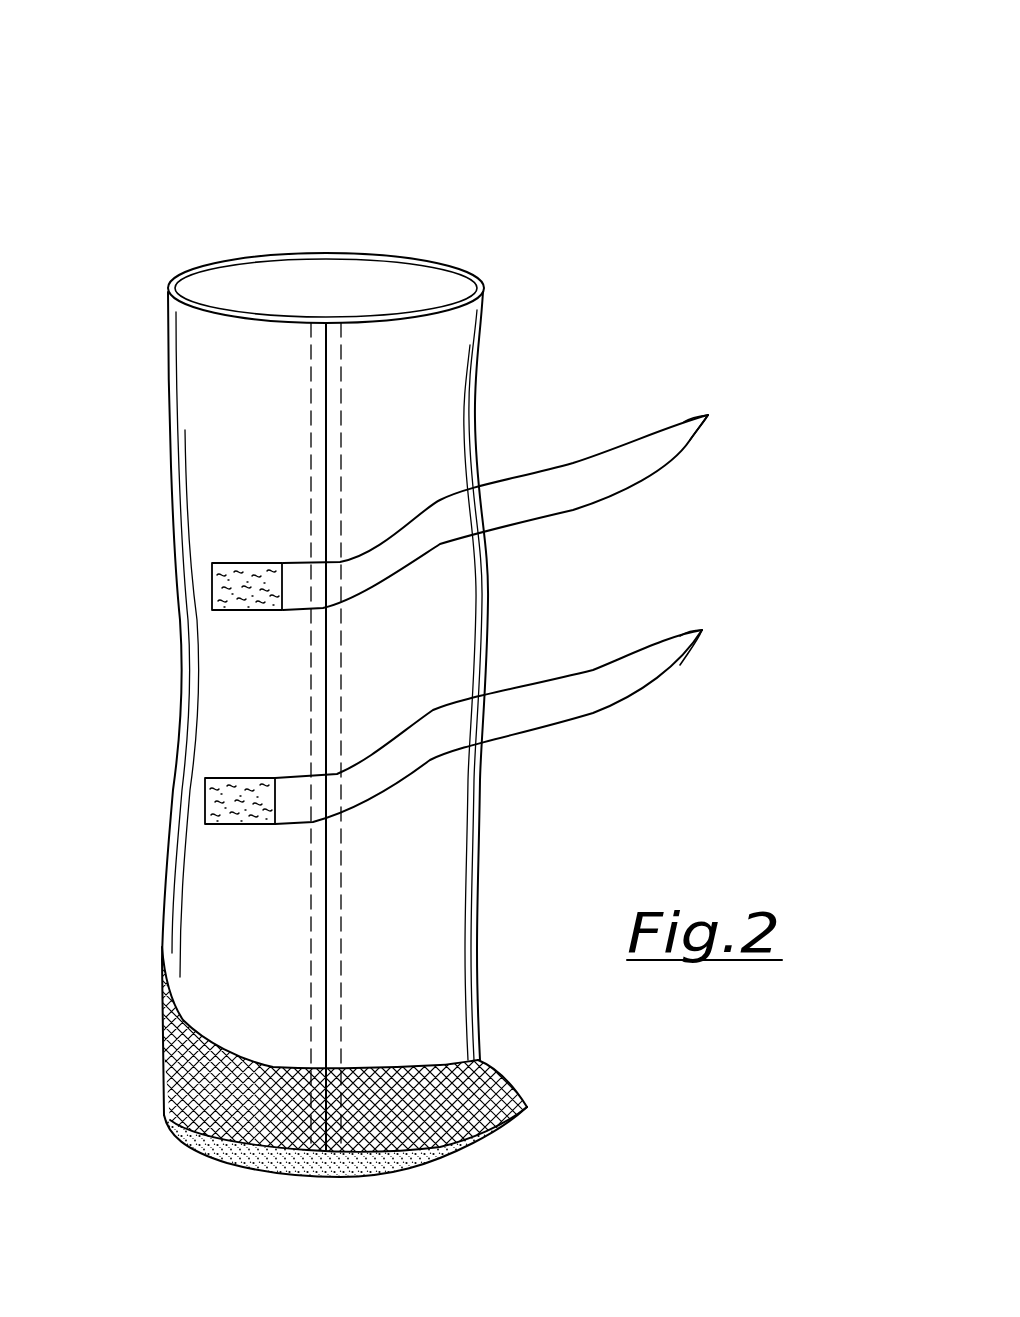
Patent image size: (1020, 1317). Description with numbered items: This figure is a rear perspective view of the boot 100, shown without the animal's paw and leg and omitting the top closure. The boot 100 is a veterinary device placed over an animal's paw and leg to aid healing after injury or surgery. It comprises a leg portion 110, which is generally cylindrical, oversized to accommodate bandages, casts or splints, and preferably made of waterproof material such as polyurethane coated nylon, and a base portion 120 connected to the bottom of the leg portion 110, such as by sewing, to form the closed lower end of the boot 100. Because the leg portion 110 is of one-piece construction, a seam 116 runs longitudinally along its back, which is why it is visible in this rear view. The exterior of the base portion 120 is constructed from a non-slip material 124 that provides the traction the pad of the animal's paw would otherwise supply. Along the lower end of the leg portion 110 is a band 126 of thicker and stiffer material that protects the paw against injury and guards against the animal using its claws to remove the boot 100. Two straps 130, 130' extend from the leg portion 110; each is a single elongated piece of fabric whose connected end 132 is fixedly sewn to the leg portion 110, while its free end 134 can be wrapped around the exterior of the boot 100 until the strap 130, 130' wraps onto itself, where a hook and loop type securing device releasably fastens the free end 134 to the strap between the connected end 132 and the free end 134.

The boot 100 is at (466, 99).
The leg portion 110 is at (168, 318).
The seam 116 is at (328, 325).
The base portion 120 is at (447, 1163).
The non-slip material 124 is at (253, 1163).
The band 126 is at (477, 1082).
The strap 130 is at (488, 704).
The strap 130' is at (495, 488).
The connected end 132 is at (222, 578).
The free end 134 is at (710, 415).